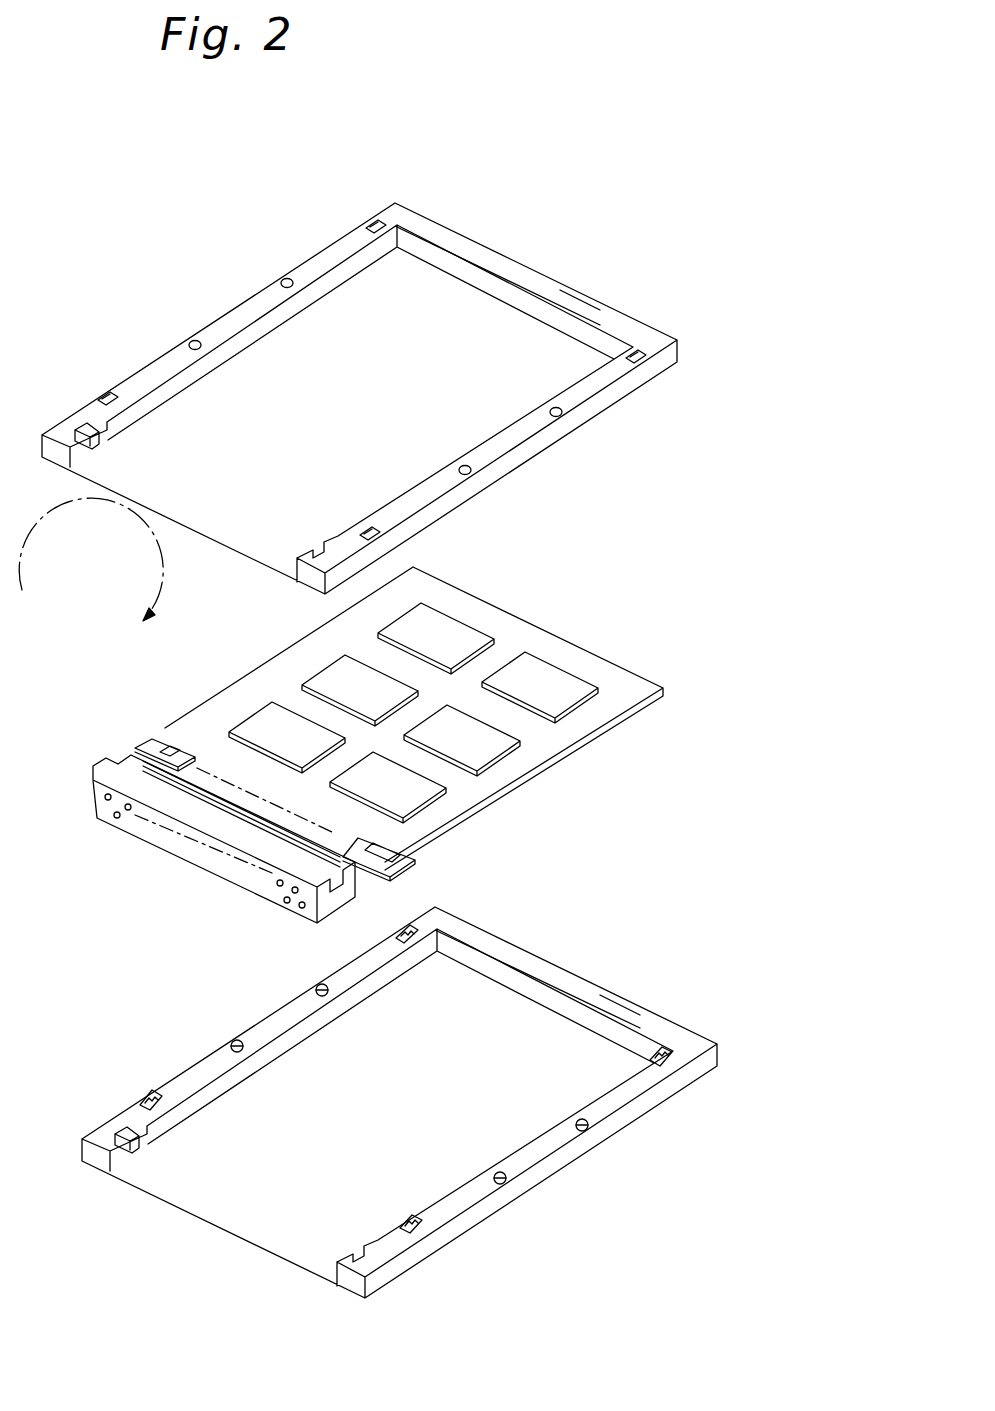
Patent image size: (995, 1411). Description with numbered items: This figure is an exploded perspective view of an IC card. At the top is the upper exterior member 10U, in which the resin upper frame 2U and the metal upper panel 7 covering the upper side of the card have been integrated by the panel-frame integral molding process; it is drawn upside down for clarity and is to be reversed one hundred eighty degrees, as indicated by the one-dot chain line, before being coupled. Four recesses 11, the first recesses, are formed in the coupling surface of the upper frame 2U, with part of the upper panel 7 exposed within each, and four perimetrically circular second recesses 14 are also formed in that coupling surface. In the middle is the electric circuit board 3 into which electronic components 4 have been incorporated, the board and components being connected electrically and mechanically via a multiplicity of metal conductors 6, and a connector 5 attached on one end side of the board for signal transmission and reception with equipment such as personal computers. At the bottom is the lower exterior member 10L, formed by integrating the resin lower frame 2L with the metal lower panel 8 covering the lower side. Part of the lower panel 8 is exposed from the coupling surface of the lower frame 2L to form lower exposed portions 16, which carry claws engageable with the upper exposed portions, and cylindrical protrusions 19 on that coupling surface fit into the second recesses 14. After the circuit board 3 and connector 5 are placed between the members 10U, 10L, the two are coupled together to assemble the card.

The upper exterior member 10U is at (560, 203).
The upper frame 2U is at (547, 286).
The upper panel 7 is at (430, 320).
The recesses (first recesses) 11 is at (370, 222).
The recesses (second recesses) 14 is at (282, 284).
The electric circuit board 3 is at (636, 697).
The electronic components 4 is at (466, 628).
The metal conductors 6 is at (190, 747).
The connector 5 is at (185, 848).
The lower exterior member 10L is at (585, 907).
The lower frame 2L is at (588, 1000).
The lower panel 8 is at (460, 1008).
The exposed portion (lower exposed portion) 16 is at (396, 932).
The protrusions 19 is at (238, 1040).